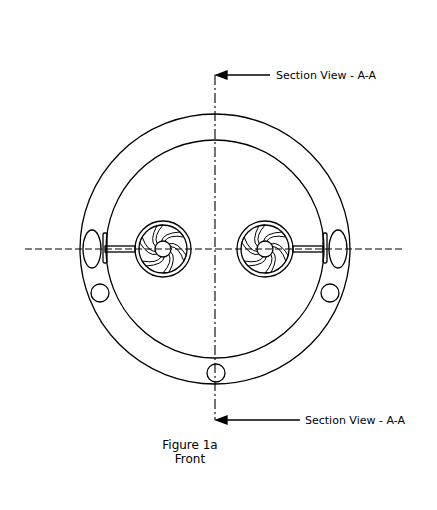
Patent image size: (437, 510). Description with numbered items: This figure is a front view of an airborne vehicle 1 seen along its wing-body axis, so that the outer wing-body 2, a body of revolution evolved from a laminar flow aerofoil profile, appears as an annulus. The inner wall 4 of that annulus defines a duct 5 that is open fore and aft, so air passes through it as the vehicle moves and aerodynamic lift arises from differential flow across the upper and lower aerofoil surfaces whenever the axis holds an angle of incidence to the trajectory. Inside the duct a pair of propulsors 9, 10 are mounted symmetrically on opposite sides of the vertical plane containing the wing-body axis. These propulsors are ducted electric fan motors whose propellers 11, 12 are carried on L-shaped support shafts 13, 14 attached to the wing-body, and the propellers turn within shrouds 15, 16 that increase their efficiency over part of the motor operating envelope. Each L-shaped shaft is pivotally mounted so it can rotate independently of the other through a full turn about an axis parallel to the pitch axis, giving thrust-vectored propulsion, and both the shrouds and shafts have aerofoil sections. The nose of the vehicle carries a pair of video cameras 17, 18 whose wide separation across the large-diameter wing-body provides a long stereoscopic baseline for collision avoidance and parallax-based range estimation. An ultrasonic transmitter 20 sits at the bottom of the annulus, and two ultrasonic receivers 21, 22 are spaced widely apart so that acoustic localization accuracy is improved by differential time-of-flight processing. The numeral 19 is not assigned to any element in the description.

The airborne vehicle 1 is at (142, 113).
The outer wing-body 2 is at (120, 152).
The inner wall 4 is at (300, 317).
The duct 5 is at (193, 298).
The propulsor 9 is at (187, 228).
The propulsor 10 is at (257, 277).
The propeller 11 is at (155, 277).
The propeller 12 is at (268, 227).
The L-shaped support shaft 13 is at (133, 247).
The L-shaped support shaft 14 is at (313, 245).
The shroud 15 is at (170, 221).
The shroud 16 is at (257, 221).
The video camera 17 is at (84, 262).
The video camera 18 is at (347, 263).
The annular body 19 is at (198, 128).
The ultrasonic transmitter 20 is at (207, 376).
The ultrasonic receiver 21 is at (91, 296).
The ultrasonic receiver 22 is at (339, 300).